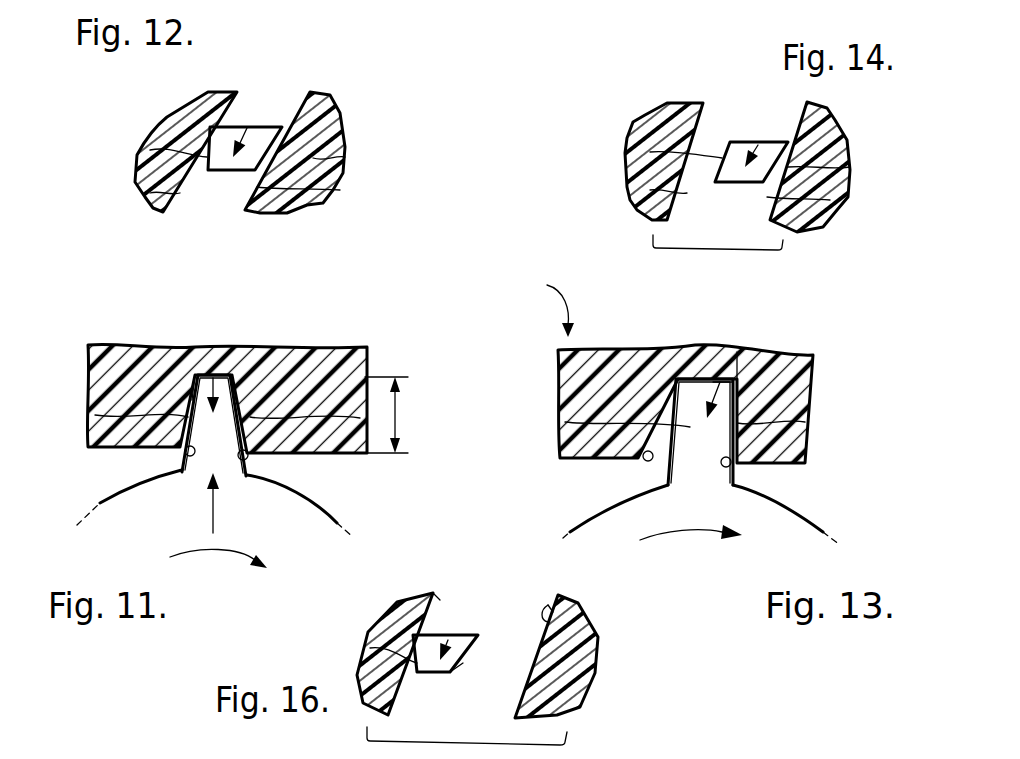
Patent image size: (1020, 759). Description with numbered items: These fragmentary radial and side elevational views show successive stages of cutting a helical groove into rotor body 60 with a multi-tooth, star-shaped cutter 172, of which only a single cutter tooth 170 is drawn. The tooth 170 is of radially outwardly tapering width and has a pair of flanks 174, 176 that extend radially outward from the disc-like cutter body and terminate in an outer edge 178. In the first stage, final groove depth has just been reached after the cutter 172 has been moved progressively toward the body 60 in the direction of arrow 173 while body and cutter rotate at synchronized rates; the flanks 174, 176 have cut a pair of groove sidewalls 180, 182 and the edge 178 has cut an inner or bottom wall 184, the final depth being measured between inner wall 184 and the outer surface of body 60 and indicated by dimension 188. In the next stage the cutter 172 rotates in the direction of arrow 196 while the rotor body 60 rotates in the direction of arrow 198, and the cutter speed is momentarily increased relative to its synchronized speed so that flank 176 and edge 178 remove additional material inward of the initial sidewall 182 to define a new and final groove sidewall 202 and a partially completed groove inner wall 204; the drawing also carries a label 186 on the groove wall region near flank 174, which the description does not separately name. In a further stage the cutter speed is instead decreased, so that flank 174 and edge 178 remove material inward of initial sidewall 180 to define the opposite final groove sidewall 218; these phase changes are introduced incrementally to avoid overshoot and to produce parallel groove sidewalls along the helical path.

In FIG. 12, the rotor body 60 is at (193, 110).
In FIG. 14, the rotor body 60 is at (647, 120).
In FIG. 11, the rotor body 60 is at (118, 352).
In FIG. 13, the rotor body 60 is at (777, 355).
In FIG. 16, the rotor body 60 is at (393, 630).
In FIG. 12, the cutter tooth 170 is at (247, 128).
In FIG. 14, the cutter tooth 170 is at (757, 145).
In FIG. 11, the cutter tooth 170 is at (212, 370).
In FIG. 13, the cutter tooth 170 is at (720, 380).
In FIG. 16, the cutter tooth 170 is at (453, 637).
In FIG. 11, the cutter 172 is at (340, 507).
In FIG. 13, the cutter 172 is at (820, 511).
In FIG. 11, the arrow 173 is at (213, 522).
In FIG. 12, the flank 174 is at (150, 150).
In FIG. 14, the flank 174 is at (650, 152).
In FIG. 11, the flank 174 is at (95, 415).
In FIG. 13, the flank 174 is at (565, 422).
In FIG. 16, the flank 174 is at (370, 648).
In FIG. 12, the flank 176 is at (345, 157).
In FIG. 14, the flank 176 is at (850, 167).
In FIG. 11, the flank 176 is at (250, 417).
In FIG. 13, the flank 176 is at (805, 422).
In FIG. 16, the flank 176 is at (463, 663).
In FIG. 11, the outer edge 178 is at (233, 370).
In FIG. 13, the outer edge 178 is at (713, 380).
In FIG. 12, the groove sidewall 180 is at (150, 193).
In FIG. 11, the groove sidewall 180 is at (182, 466).
In FIG. 12, the groove sidewall 182 is at (340, 190).
In FIG. 11, the groove sidewall 182 is at (250, 460).
In FIG. 11, the groove inner wall 184 is at (193, 370).
In FIG. 14, the corner 186 is at (650, 190).
In FIG. 13, the corner 186 is at (645, 462).
In FIG. 11, the final groove depth dimension 188 is at (410, 415).
In FIG. 13, the arrow 196 is at (683, 532).
In FIG. 13, the arrow 198 is at (560, 310).
In FIG. 14, the final groove sidewall 202 is at (830, 200).
In FIG. 13, the final groove sidewall 202 is at (733, 473).
In FIG. 16, the final groove sidewall 202 is at (547, 610).
In FIG. 13, the partially completed groove inner wall 204 is at (743, 380).
In FIG. 16, the final groove sidewall 218 is at (445, 588).